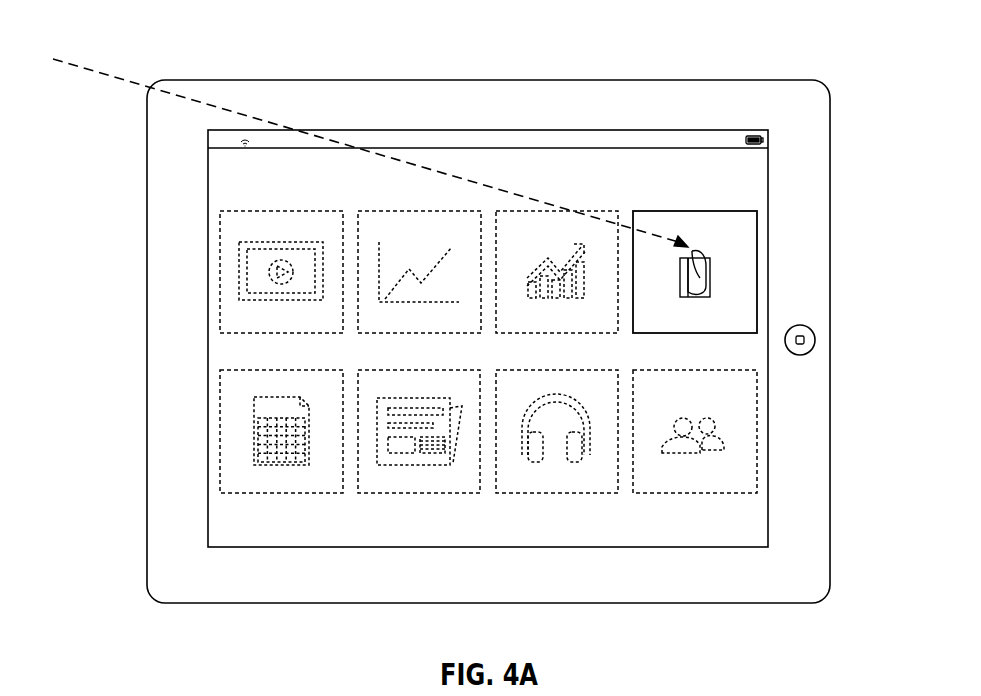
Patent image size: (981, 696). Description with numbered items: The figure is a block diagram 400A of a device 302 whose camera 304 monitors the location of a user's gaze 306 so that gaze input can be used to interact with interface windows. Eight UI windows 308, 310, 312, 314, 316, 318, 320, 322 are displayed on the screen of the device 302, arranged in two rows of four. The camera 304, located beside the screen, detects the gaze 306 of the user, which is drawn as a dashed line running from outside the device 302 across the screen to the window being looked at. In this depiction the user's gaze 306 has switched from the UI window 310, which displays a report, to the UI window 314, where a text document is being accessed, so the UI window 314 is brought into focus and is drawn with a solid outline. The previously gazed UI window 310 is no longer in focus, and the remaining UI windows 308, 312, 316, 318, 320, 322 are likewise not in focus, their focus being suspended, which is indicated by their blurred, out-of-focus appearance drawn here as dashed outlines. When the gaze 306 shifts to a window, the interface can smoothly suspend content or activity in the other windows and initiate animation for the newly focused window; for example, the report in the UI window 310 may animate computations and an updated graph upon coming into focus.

The block diagram 400A is at (783, 52).
The device 302 is at (208, 80).
The camera 304 is at (816, 340).
The gaze 306 is at (72, 63).
The UI window 308 is at (283, 210).
The UI window 310 is at (421, 210).
The UI window 312 is at (580, 210).
The UI window 314 is at (696, 210).
The UI window 316 is at (283, 494).
The UI window 318 is at (422, 494).
The UI window 320 is at (560, 494).
The UI window 322 is at (697, 494).